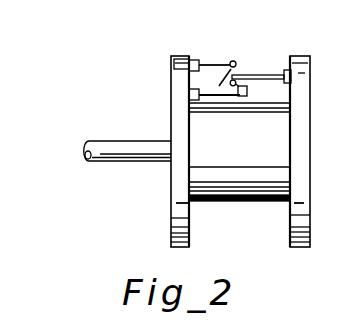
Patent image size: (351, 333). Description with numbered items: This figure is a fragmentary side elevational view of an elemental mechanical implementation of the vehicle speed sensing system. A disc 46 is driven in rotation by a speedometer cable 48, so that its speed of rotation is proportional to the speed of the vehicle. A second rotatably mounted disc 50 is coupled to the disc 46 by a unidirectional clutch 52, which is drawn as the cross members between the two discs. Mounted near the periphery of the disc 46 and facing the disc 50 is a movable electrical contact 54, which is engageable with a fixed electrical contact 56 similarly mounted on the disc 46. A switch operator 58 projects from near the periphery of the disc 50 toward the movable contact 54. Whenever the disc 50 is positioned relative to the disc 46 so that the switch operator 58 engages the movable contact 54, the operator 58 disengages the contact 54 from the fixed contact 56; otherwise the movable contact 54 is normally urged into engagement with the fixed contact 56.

The disc 46 is at (177, 62).
The speedometer cable 48 is at (133, 162).
The second rotatably mounted disc 50 is at (310, 109).
The unidirectional clutch 52 is at (232, 201).
The movable electrical contact 54 is at (214, 66).
The fixed electrical contact 56 is at (243, 97).
The switch operator 58 is at (259, 75).